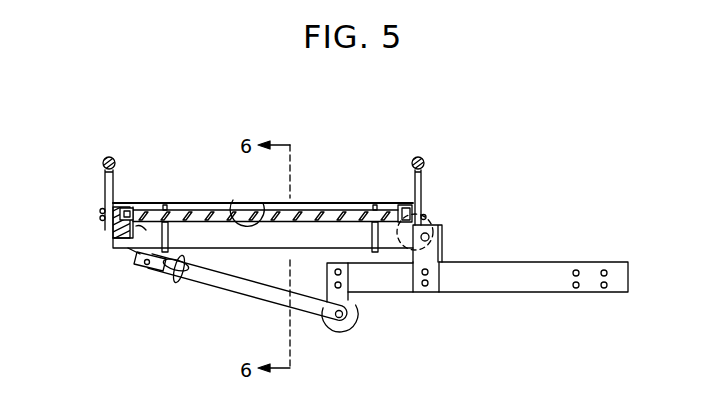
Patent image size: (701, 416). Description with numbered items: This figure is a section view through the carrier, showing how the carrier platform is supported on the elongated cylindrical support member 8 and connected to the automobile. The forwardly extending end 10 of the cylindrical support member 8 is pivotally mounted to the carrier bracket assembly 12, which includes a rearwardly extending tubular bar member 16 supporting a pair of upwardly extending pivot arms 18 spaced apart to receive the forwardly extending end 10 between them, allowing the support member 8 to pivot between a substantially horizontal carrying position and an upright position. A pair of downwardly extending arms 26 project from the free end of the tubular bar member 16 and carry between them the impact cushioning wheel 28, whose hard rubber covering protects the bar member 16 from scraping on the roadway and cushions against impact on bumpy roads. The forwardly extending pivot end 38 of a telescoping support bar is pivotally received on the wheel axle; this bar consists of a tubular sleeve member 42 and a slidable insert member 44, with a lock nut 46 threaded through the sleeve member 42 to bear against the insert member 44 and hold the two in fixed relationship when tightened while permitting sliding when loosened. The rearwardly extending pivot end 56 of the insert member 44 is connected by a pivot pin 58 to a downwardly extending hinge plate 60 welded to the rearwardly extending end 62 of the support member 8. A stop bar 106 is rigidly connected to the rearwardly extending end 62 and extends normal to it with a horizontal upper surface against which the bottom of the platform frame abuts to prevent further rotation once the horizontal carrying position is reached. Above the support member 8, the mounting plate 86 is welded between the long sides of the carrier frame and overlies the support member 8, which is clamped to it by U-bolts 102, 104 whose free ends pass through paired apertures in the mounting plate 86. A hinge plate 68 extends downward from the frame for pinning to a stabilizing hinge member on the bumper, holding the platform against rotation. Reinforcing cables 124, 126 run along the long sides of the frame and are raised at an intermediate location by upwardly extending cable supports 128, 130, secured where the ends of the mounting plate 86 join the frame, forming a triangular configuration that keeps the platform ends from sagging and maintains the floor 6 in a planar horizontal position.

The floor 6 is at (340, 209).
The elongated cylindrical support member 8 is at (262, 245).
The forwardly extending end 10 is at (442, 228).
The carrier bracket assembly 12 is at (420, 294).
The tubular bar member 16 is at (478, 280).
The pivot arms 18 is at (432, 258).
The downwardly extending arms 26 is at (348, 296).
The impact cushioning wheel 28 is at (352, 325).
The forwardly extending pivot end 38 is at (333, 330).
The tubular sleeve member 42 is at (235, 297).
The slidable insert member 44 is at (143, 270).
The lock nut 46 is at (172, 280).
The rearwardly extending pivot end 56 is at (145, 263).
The pivot pin 58 is at (138, 257).
The downwardly extending hinge plate 60 is at (152, 247).
The rearwardly extending end 62 is at (141, 230).
The hinge plate 68 is at (418, 218).
The mounting plate 86 is at (232, 203).
The U-bolt 102 is at (170, 230).
The U-bolt 104 is at (293, 234).
The stop bar 106 is at (120, 228).
The reinforcing cable 124 is at (104, 158).
The reinforcing cable 126 is at (422, 160).
The cable support 128 is at (105, 178).
The cable support 130 is at (423, 185).